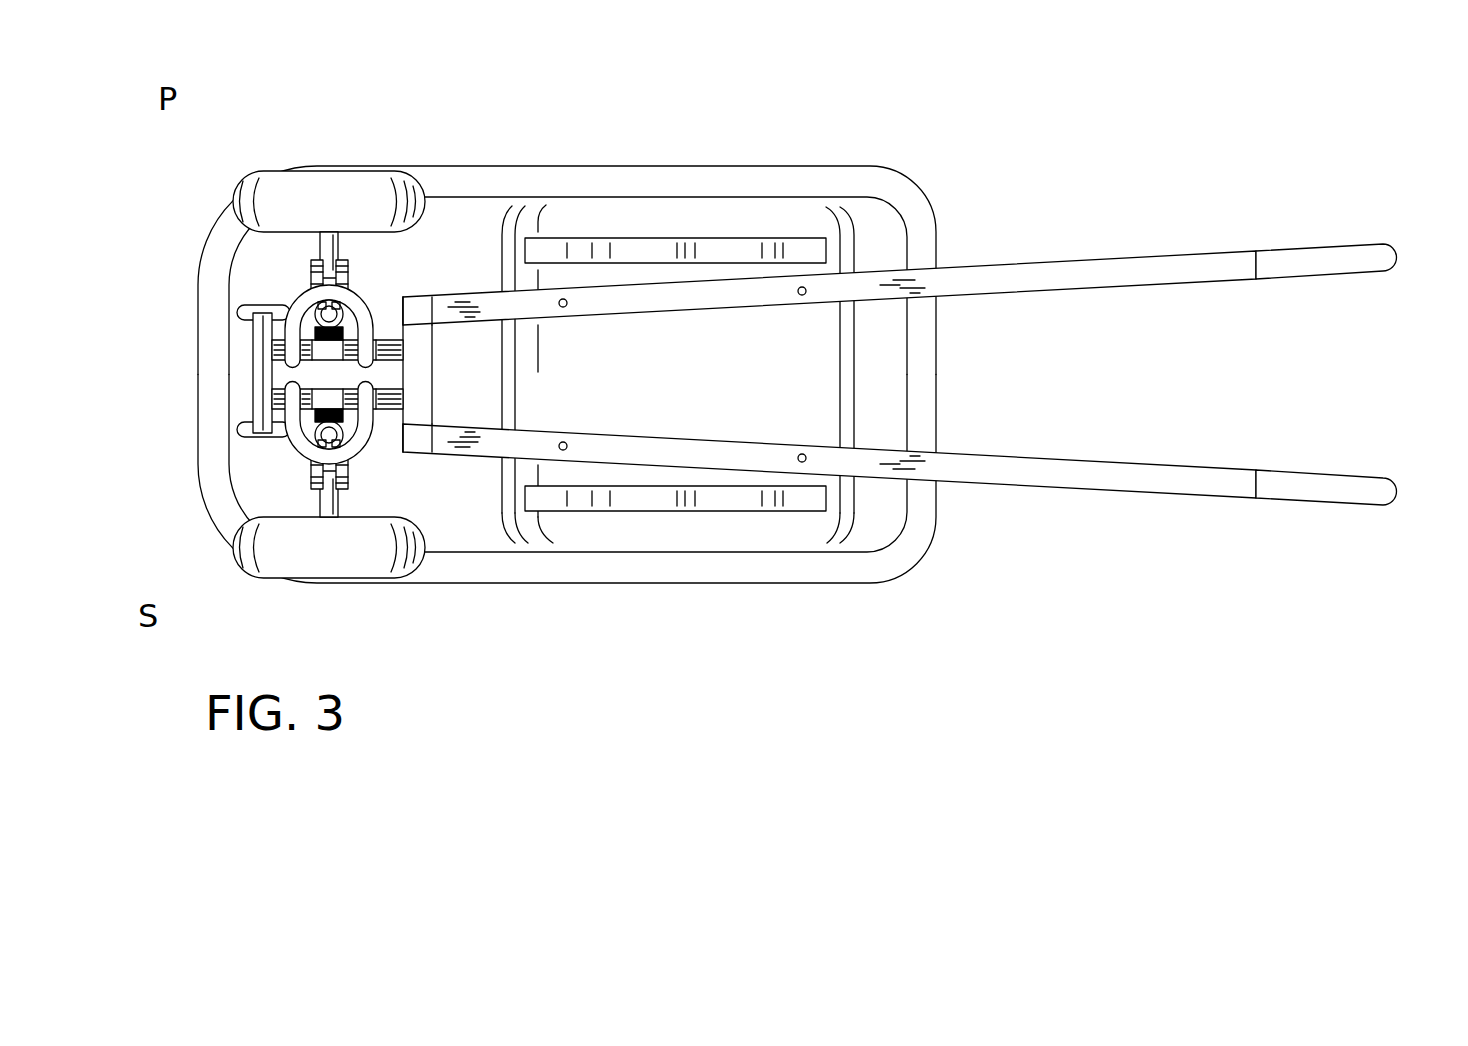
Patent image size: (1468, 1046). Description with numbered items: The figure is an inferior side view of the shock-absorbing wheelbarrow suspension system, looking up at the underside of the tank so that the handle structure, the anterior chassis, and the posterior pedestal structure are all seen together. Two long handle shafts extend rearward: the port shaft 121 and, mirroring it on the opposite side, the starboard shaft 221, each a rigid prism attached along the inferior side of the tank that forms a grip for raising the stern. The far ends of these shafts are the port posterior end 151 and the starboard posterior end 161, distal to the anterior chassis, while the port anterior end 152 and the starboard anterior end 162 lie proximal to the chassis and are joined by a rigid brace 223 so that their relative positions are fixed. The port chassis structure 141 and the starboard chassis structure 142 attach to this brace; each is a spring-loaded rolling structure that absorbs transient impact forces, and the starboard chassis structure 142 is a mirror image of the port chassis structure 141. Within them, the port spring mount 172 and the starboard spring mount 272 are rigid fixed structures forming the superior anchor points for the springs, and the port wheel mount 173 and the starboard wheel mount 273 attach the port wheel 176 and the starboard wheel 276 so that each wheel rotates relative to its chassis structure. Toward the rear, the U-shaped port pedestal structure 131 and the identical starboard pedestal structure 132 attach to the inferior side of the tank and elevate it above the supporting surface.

The port shaft 121 is at (1067, 265).
The second handle bar 221 is at (990, 470).
The port posterior end 151 is at (1395, 255).
The starboard posterior end 161 is at (1397, 495).
The port pedestal structure 131 is at (728, 250).
The starboard pedestal structure 132 is at (793, 503).
The port chassis structure 141 is at (232, 238).
The starboard chassis structure 142 is at (260, 485).
The port anterior end 152 is at (432, 305).
The starboard anterior end 162 is at (416, 438).
The mounting plate 223 is at (422, 378).
The port spring mount 172 is at (360, 308).
The starboard spring mount 272 is at (357, 447).
The port wheel mount 173 is at (330, 244).
The starboard wheel mount 273 is at (332, 500).
The port wheel 176 is at (322, 198).
The starboard wheel 276 is at (305, 558).